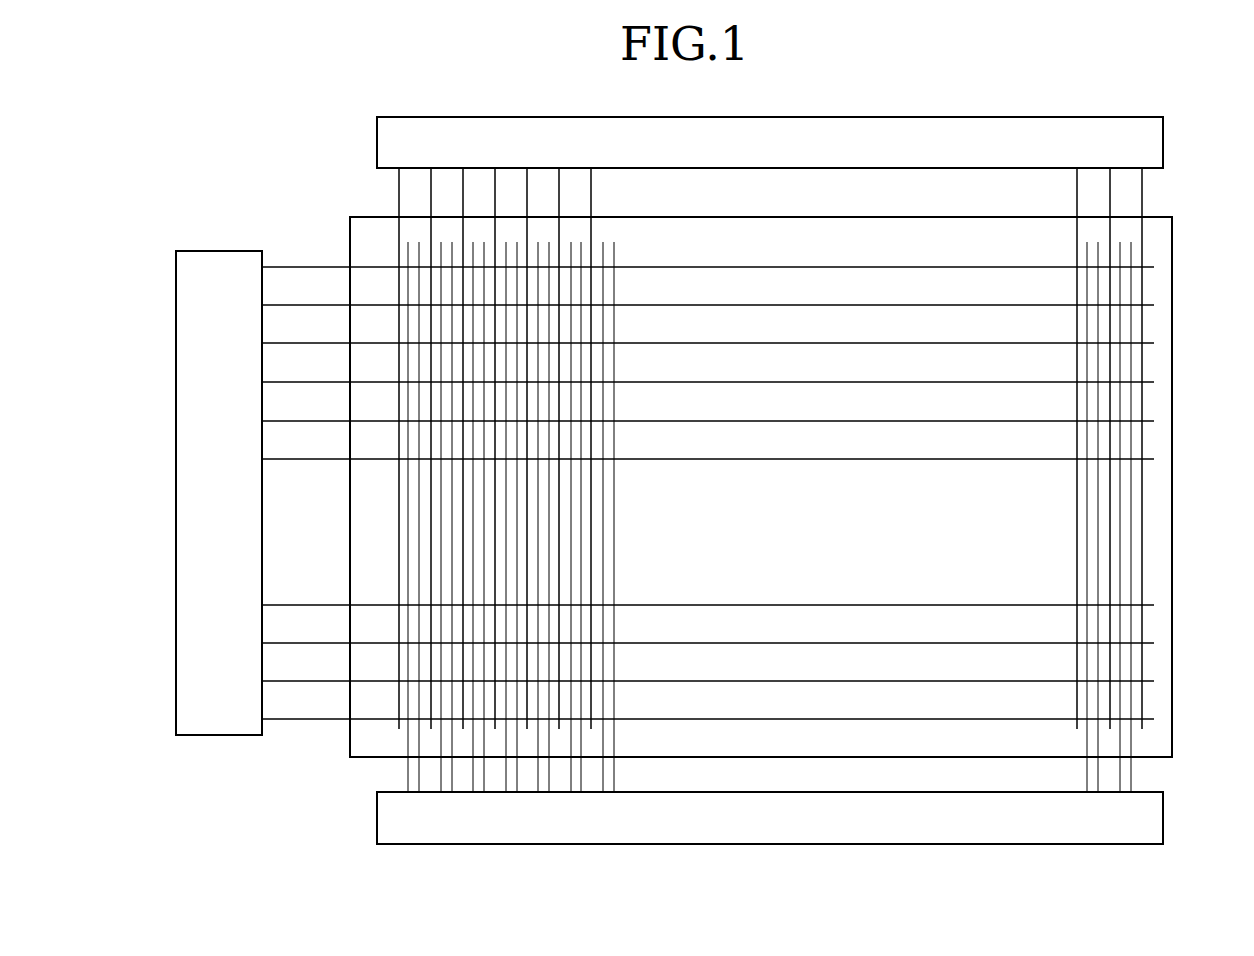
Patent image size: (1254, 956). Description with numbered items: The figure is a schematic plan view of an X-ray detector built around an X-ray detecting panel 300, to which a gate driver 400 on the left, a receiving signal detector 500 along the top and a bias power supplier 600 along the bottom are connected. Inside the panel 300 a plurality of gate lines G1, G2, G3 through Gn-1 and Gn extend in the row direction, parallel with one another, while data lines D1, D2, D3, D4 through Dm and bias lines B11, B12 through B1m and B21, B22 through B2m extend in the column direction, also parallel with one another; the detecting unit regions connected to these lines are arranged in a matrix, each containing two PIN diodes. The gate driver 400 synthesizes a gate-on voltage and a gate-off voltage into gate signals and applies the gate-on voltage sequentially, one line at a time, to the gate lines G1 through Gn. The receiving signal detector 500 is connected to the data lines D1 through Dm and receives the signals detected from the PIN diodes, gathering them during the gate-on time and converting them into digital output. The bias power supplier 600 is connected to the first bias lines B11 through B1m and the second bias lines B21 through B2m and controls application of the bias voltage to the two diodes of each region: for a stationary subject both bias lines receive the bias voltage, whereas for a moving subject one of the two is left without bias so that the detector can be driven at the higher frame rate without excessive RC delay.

The receiving signal detector 500 is at (1005, 116).
The X-ray detecting panel 300 is at (1172, 325).
The gate driver 400 is at (176, 445).
The bias power supplier 600 is at (1165, 818).
The gate line G1 is at (708, 254).
The gate line G2 is at (708, 292).
The gate line G3 is at (708, 330).
The gate line Gn-1 is at (708, 668).
The gate line Gn is at (708, 706).
The data line D1 is at (413, 448).
The data line D2 is at (445, 448).
The data line D3 is at (477, 448).
The data line D4 is at (509, 448).
The data line Dm is at (1126, 448).
The first bias line B11 is at (407, 775).
The second bias line B21 is at (419, 780).
The first bias line B12 is at (441, 778).
The second bias line B22 is at (452, 782).
The first bias line B1m is at (1120, 770).
The second bias line B2m is at (1131, 770).